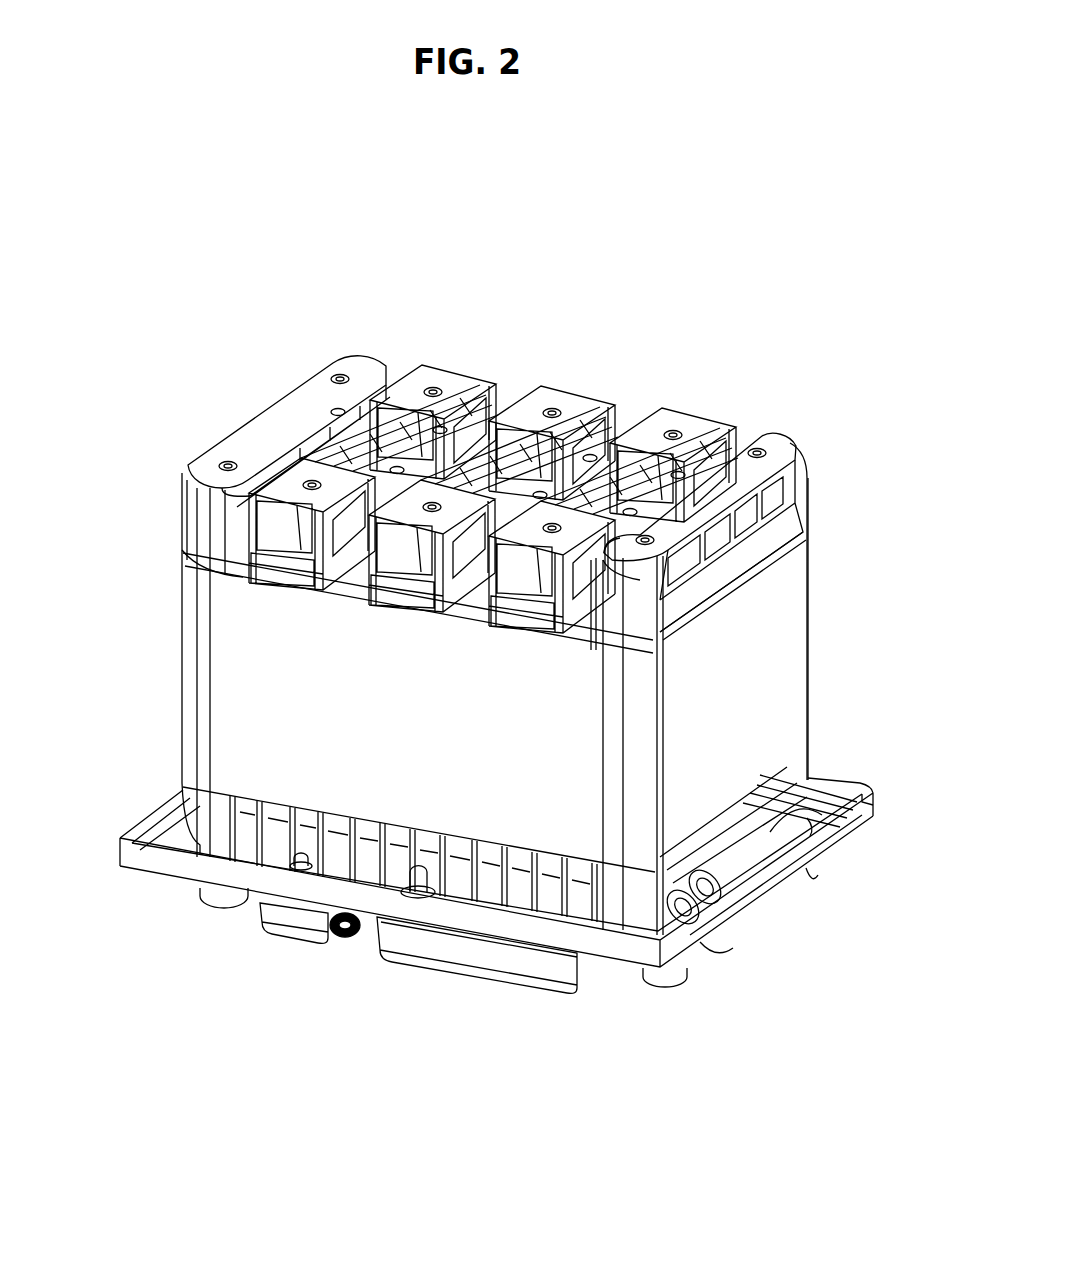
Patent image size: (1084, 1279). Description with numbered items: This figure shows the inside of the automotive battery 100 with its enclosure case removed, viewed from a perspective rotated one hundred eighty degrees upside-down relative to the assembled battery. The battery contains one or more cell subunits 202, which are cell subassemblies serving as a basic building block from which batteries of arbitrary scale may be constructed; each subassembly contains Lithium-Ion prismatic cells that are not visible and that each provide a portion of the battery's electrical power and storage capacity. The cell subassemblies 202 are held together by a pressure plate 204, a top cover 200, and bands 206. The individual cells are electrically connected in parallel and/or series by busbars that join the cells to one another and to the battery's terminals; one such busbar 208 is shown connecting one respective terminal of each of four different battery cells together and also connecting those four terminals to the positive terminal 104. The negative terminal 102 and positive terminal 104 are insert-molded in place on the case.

The automotive battery 100 is at (392, 320).
The negative terminal 102 is at (210, 902).
The positive terminal 104 is at (655, 985).
The top cover 200 is at (845, 780).
The cell subunits 202 is at (551, 390).
The pressure plate 204 is at (782, 438).
The bands 206 is at (733, 690).
The busbar 208 is at (733, 868).